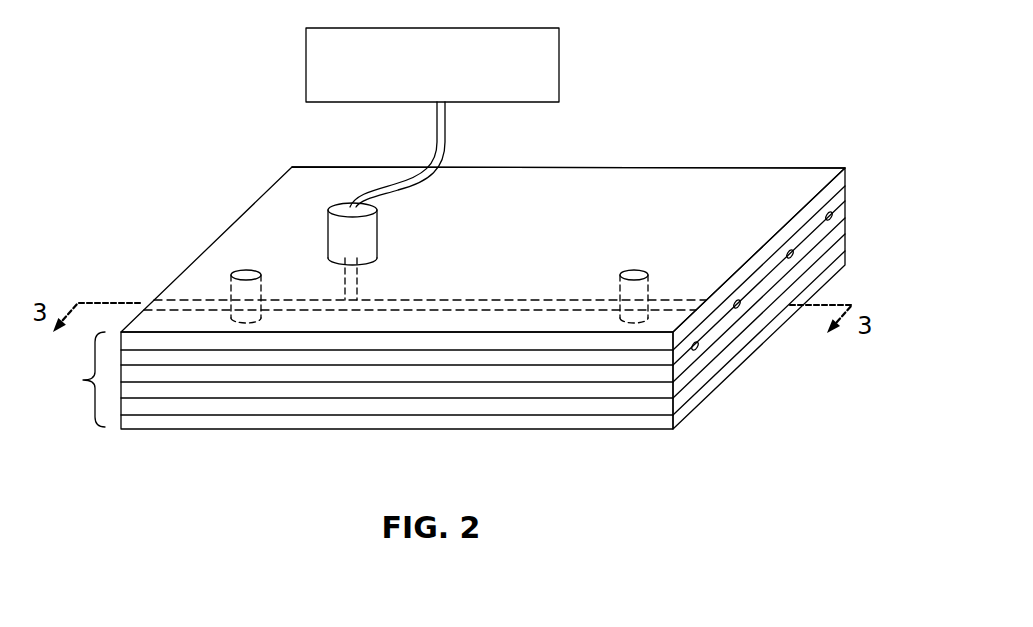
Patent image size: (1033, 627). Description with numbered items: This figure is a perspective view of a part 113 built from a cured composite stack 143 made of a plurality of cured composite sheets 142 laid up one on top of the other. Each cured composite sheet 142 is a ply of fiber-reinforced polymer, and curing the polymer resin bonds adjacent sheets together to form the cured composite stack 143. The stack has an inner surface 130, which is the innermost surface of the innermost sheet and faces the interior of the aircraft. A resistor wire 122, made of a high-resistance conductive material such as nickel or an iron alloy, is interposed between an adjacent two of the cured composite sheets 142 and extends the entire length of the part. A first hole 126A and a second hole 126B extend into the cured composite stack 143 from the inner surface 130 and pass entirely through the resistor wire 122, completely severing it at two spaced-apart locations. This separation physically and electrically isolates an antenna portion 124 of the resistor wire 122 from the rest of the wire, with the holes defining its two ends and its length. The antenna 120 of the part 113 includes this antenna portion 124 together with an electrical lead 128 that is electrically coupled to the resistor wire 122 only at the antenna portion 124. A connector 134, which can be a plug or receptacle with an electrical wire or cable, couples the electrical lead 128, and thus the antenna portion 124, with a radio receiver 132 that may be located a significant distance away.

The part 113 is at (229, 217).
The antenna 120 is at (588, 212).
The resistor wire 122 is at (193, 297).
The antenna portion 124 is at (483, 297).
The first hole 126A is at (265, 258).
The second hole 126B is at (634, 268).
The electrical lead 128 is at (357, 280).
The inner surface 130 is at (733, 207).
The radio receiver 132 is at (417, 93).
The connector 134 is at (389, 225).
The cured composite sheets 142 is at (197, 422).
The cured composite stack 143 is at (72, 379).